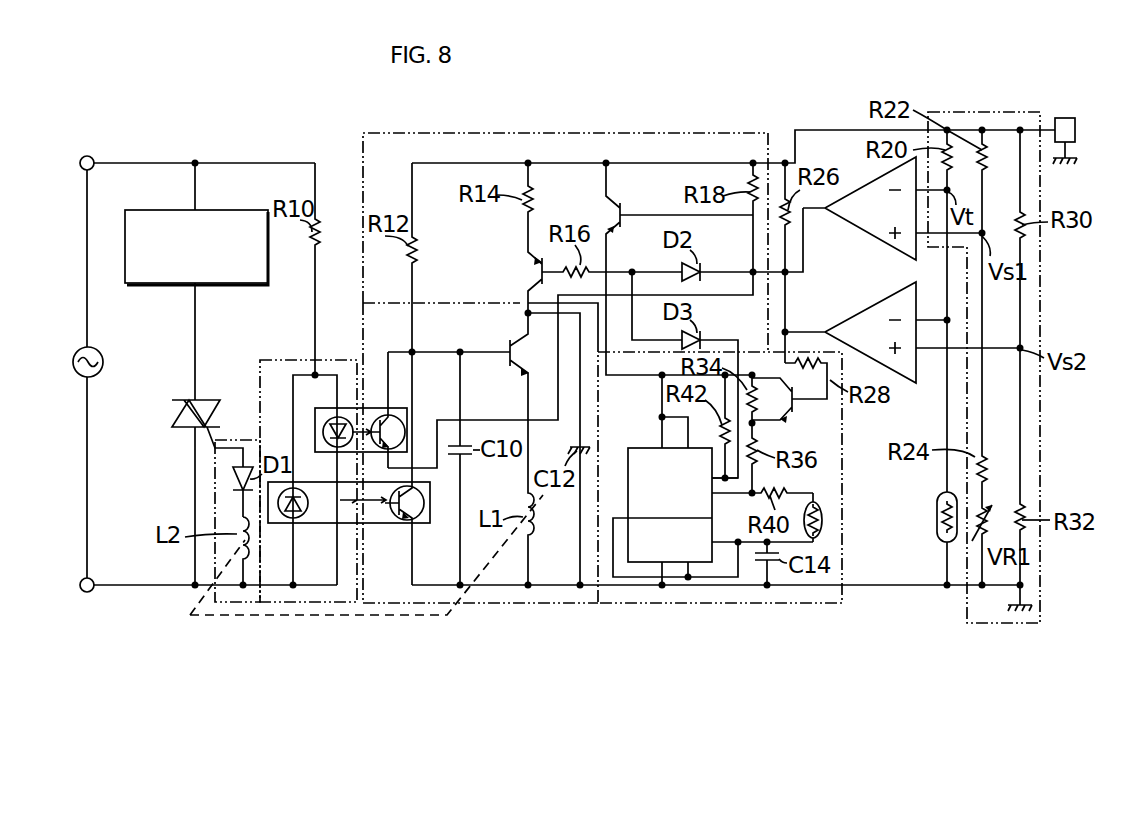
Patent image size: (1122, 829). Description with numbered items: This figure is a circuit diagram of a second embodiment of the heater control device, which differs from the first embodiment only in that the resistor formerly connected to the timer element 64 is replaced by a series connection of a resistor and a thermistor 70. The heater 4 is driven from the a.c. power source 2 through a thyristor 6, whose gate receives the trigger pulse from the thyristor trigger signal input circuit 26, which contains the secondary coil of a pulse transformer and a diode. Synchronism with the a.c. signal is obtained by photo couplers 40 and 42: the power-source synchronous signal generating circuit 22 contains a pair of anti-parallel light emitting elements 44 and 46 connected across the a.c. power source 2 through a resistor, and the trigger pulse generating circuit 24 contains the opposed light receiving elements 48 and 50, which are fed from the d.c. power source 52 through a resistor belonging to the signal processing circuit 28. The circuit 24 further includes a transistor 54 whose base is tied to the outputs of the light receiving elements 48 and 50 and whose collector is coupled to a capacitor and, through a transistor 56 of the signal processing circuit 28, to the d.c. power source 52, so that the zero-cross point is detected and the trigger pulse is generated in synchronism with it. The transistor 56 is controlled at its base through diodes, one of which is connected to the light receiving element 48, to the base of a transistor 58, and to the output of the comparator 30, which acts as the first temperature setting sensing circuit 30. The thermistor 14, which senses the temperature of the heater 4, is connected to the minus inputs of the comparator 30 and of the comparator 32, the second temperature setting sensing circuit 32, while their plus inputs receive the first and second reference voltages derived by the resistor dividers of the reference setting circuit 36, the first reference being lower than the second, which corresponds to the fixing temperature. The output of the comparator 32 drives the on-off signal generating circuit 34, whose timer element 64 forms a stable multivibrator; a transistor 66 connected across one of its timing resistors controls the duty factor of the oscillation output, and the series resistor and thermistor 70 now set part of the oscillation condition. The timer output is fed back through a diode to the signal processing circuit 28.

The a.c. power source 2 is at (74, 348).
The heater 4 is at (218, 210).
The thyristor 6 is at (215, 405).
The thermistor 14 is at (937, 523).
The power-source synchronous signal generating circuit 22 is at (302, 603).
The trigger pulse generating circuit 24 is at (527, 603).
The thyristor trigger signal input circuit 26 is at (228, 603).
The signal processing circuit 28 is at (517, 133).
The comparator 30 is at (870, 238).
The comparator 32 is at (855, 312).
The on-off signal generating circuit 34 is at (757, 603).
The reference setting circuit 36 is at (1005, 112).
The photo coupler 40 is at (350, 405).
The photo coupler 42 is at (373, 525).
The light emitting element 44 is at (330, 411).
The light emitting element 46 is at (298, 520).
The light receiving element 48 is at (405, 418).
The light receiving element 50 is at (412, 522).
The d.c. power source 52 is at (1063, 118).
The transistor 54 is at (458, 366).
The transistor 56 is at (535, 272).
The transistor 58 is at (614, 210).
The timer element 64 is at (647, 447).
The transistor 66 is at (790, 412).
The thermistor 70 is at (823, 522).